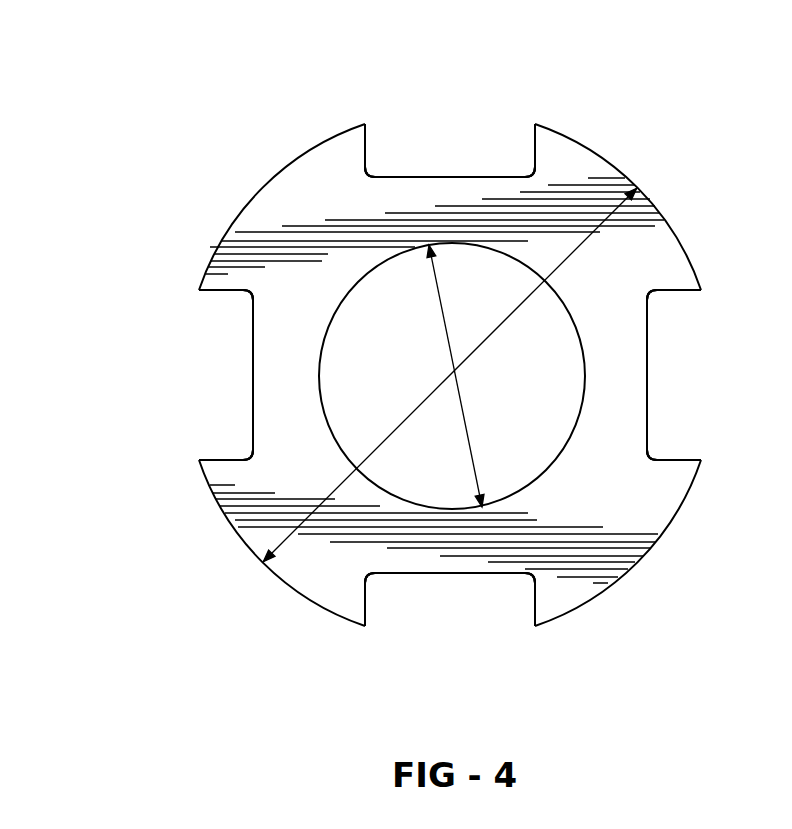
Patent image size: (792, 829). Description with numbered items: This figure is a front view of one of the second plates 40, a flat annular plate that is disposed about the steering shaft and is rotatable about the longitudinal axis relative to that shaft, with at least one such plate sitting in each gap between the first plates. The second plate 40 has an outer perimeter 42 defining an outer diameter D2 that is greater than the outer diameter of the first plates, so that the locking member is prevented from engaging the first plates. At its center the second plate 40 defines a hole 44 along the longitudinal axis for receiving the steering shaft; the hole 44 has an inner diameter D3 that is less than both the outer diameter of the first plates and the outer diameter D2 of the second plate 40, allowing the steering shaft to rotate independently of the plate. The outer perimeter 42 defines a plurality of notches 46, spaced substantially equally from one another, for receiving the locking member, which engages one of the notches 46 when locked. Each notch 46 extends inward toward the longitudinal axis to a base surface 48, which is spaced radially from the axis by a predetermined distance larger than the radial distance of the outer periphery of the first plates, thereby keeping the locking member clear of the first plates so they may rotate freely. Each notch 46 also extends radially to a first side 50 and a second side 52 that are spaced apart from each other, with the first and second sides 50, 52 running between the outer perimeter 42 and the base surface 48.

The second plate 40 is at (643, 503).
The outer perimeter 42 is at (569, 139).
The hole 44 is at (582, 407).
The notch 46 is at (420, 128).
The base surface 48 is at (463, 176).
The first side 50 is at (534, 148).
The second side 52 is at (368, 150).
The outer diameter D2 is at (562, 268).
The inner diameter D3 is at (446, 328).